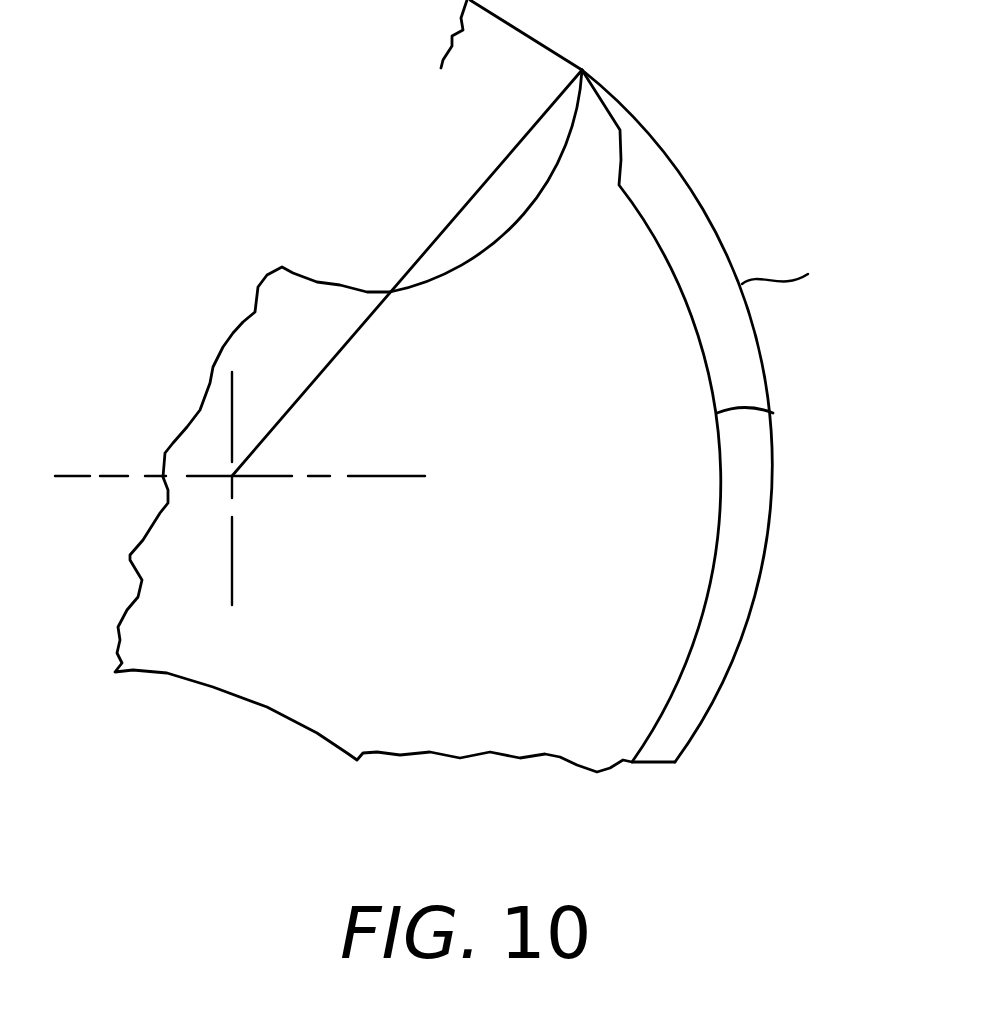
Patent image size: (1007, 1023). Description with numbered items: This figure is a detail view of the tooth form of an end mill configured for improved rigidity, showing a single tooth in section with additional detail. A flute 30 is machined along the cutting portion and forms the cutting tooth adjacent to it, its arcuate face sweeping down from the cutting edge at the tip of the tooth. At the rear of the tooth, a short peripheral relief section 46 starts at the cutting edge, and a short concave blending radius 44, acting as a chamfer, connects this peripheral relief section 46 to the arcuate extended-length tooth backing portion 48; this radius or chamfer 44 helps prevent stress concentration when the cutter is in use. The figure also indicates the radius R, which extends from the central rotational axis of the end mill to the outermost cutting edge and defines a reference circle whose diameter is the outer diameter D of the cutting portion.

The flute 30 is at (530, 200).
The concave blending radius chamfer 44 is at (621, 165).
The peripheral relief section 46 is at (610, 100).
The arcuate extended-length tooth backing portion 48 is at (773, 413).
The outer diameter D is at (789, 277).
The radius R is at (418, 260).